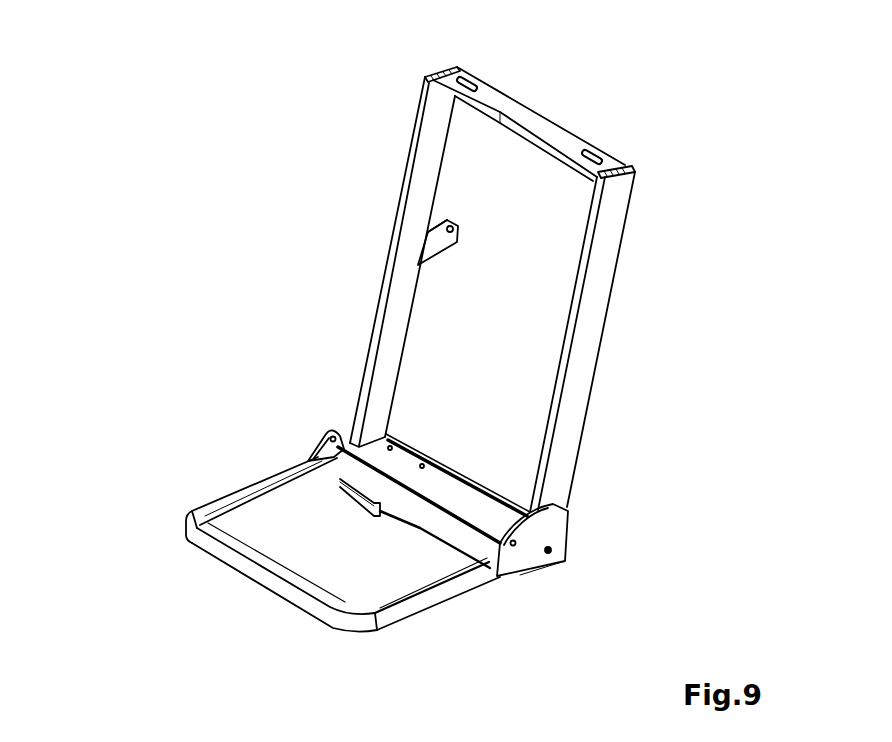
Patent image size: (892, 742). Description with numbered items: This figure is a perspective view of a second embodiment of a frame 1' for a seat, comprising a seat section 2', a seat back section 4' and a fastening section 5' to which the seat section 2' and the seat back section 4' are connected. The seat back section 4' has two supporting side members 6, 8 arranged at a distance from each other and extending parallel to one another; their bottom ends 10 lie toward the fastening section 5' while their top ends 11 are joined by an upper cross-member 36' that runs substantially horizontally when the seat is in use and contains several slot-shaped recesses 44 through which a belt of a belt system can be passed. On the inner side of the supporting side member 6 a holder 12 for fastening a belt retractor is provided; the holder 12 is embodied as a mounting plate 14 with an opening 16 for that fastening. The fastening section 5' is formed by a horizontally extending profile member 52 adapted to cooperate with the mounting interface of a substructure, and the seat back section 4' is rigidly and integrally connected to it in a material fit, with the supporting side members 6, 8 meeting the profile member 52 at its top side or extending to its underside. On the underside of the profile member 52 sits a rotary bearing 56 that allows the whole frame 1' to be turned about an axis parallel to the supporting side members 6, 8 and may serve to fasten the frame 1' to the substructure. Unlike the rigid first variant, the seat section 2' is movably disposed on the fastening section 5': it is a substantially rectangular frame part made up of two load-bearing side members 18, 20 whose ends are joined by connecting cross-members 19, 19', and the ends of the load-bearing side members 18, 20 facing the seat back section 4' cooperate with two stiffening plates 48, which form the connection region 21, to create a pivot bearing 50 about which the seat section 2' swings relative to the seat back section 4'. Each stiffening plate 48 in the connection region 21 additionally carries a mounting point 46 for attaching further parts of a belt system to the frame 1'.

The frame 1' is at (364, 348).
The seat section 2' is at (365, 565).
The seat back section 4' is at (560, 289).
The fastening section 5' is at (433, 590).
The supporting side member 6 is at (380, 288).
The supporting side member 8 is at (598, 357).
The bottom end 10 is at (539, 585).
The top end 11 is at (657, 172).
The holder 12 is at (452, 250).
The mounting plate 14 is at (434, 246).
The opening 16 is at (460, 230).
The load-bearing side member 18 is at (235, 495).
The connecting cross-member 19 is at (268, 452).
The connecting cross-member 19' is at (234, 568).
The load-bearing side member 20 is at (403, 608).
The connection region 21 is at (560, 583).
The upper cross-member 36' is at (432, 102).
The slot-shaped recess 44 is at (472, 83).
The mounting point 46 is at (566, 551).
The stiffening plate 48 is at (348, 424).
The pivot bearing 50 is at (322, 423).
The profile member 52 is at (463, 502).
The rotary bearing 56 is at (372, 515).